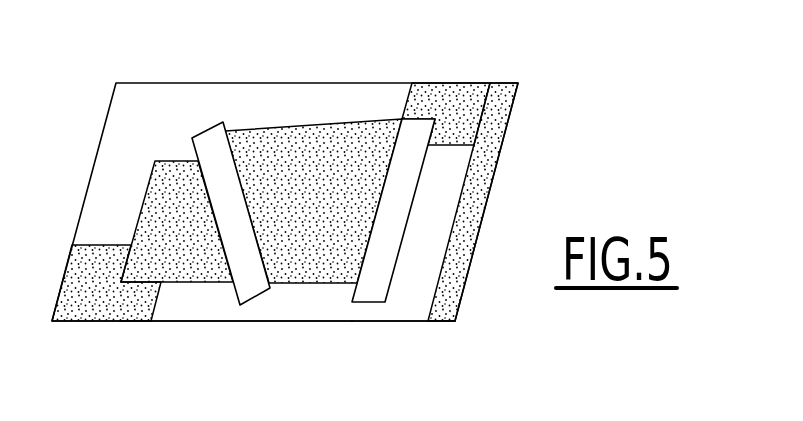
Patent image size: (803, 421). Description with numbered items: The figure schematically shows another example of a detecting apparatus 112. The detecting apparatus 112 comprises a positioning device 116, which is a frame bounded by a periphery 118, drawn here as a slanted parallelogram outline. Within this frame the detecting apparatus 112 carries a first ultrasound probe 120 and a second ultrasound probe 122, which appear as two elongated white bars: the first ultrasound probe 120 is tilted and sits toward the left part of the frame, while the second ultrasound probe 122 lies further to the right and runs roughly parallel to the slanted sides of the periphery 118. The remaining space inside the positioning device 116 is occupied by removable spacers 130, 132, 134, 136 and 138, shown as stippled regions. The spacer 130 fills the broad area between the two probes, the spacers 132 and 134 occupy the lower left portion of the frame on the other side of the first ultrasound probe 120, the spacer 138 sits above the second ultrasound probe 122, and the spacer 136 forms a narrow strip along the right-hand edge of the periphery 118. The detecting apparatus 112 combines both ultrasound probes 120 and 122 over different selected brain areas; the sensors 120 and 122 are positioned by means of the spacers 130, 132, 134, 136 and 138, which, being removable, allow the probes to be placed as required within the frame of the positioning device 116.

The detecting apparatus 112 is at (518, 60).
The positioning device 116 is at (403, 322).
The periphery 118 is at (193, 321).
The first ultrasound probe 120 is at (208, 121).
The second ultrasound probe 122 is at (425, 111).
The removable spacer 130 is at (268, 124).
The removable spacer 132 is at (139, 200).
The removable spacer 134 is at (96, 298).
The removable spacer 136 is at (493, 124).
The removable spacer 138 is at (470, 107).